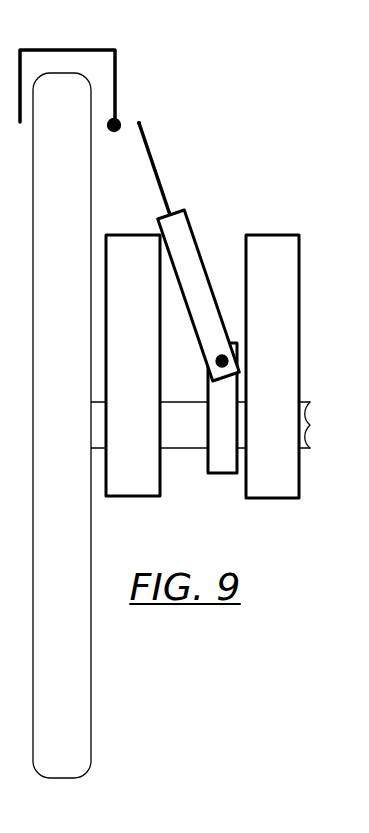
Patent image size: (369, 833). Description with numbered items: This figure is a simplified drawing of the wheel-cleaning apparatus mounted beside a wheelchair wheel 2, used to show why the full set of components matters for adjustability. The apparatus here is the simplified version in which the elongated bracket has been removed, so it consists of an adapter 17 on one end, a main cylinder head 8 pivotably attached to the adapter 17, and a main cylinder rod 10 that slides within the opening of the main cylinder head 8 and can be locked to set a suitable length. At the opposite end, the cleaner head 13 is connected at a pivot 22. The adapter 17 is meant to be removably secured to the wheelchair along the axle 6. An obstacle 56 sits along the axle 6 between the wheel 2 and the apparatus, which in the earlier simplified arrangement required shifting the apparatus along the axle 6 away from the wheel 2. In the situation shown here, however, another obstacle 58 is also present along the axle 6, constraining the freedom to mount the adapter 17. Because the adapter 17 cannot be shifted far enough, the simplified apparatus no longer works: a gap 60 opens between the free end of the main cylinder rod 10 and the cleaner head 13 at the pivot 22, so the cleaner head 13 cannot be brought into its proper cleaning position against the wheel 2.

The wheel 2 is at (92, 690).
The axle 6 is at (311, 426).
The main cylinder head 8 is at (192, 230).
The main cylinder rod 10 is at (157, 160).
The cleaner head 13 is at (60, 49).
The adapter 17 is at (208, 465).
The pivot 22 is at (118, 120).
The obstacle 56 is at (133, 365).
The obstacle 58 is at (272, 366).
The gap 60 is at (137, 117).